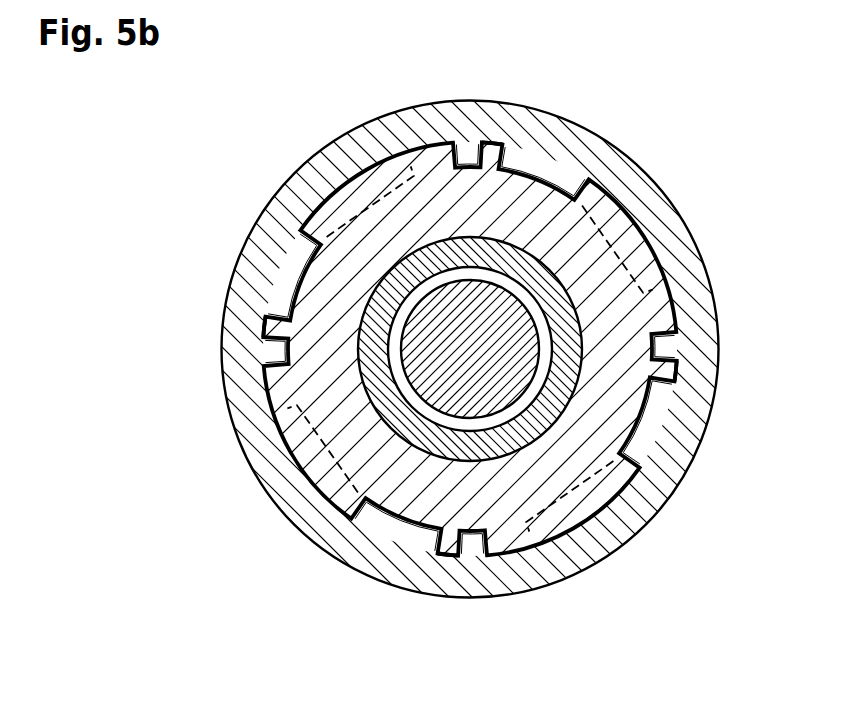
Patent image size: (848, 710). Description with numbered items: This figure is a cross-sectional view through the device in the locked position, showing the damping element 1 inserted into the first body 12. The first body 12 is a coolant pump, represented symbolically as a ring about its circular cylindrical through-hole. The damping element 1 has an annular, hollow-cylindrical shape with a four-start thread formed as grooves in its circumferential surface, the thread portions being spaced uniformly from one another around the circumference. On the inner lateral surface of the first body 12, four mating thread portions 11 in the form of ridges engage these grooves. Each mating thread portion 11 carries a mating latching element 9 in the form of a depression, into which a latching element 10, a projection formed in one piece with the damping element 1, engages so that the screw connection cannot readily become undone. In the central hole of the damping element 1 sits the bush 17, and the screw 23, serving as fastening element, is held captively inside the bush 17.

The damping element 1 is at (610, 290).
The mating latching element 9 is at (463, 150).
The latching element 10 is at (492, 153).
The mating thread portion 11 is at (527, 157).
The first body 12 is at (647, 198).
The bush 17 is at (433, 263).
The screw 23 is at (437, 317).